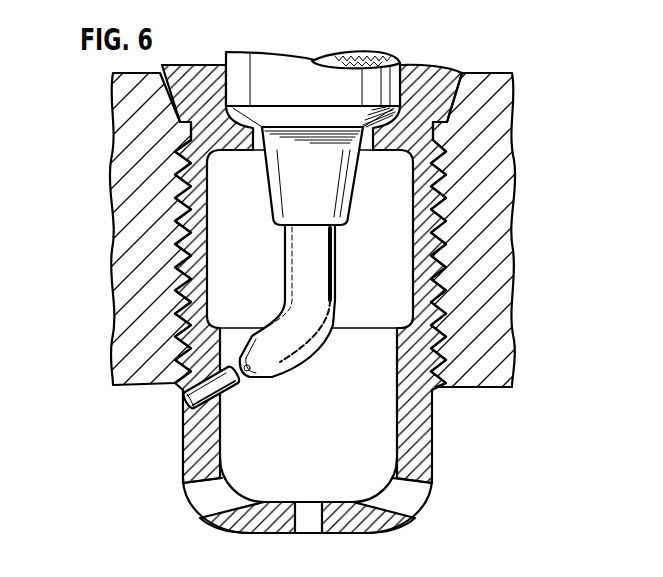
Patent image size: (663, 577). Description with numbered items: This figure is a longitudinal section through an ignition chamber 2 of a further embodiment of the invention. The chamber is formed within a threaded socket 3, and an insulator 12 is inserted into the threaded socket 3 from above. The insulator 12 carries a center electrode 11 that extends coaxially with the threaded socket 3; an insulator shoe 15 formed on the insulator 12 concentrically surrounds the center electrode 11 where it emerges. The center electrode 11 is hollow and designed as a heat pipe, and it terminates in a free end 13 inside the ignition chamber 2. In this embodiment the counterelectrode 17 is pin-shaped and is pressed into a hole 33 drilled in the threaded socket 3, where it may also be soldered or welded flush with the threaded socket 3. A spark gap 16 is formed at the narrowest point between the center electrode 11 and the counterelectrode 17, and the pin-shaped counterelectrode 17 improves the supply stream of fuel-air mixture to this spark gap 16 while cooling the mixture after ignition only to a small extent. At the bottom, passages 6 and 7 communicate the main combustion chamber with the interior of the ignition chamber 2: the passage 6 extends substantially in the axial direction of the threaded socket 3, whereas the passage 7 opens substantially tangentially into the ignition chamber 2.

The threaded socket 3 is at (441, 66).
The ignition chamber 2 is at (373, 405).
The insulator 12 is at (337, 85).
The insulator shoe 15 is at (277, 185).
The center electrode 11 is at (316, 263).
The free end 13 is at (252, 378).
The spark gap 16 is at (235, 365).
The counterelectrode 17 is at (221, 385).
The hole 33 is at (192, 411).
The passage 7 is at (211, 487).
The passage 6 is at (301, 518).